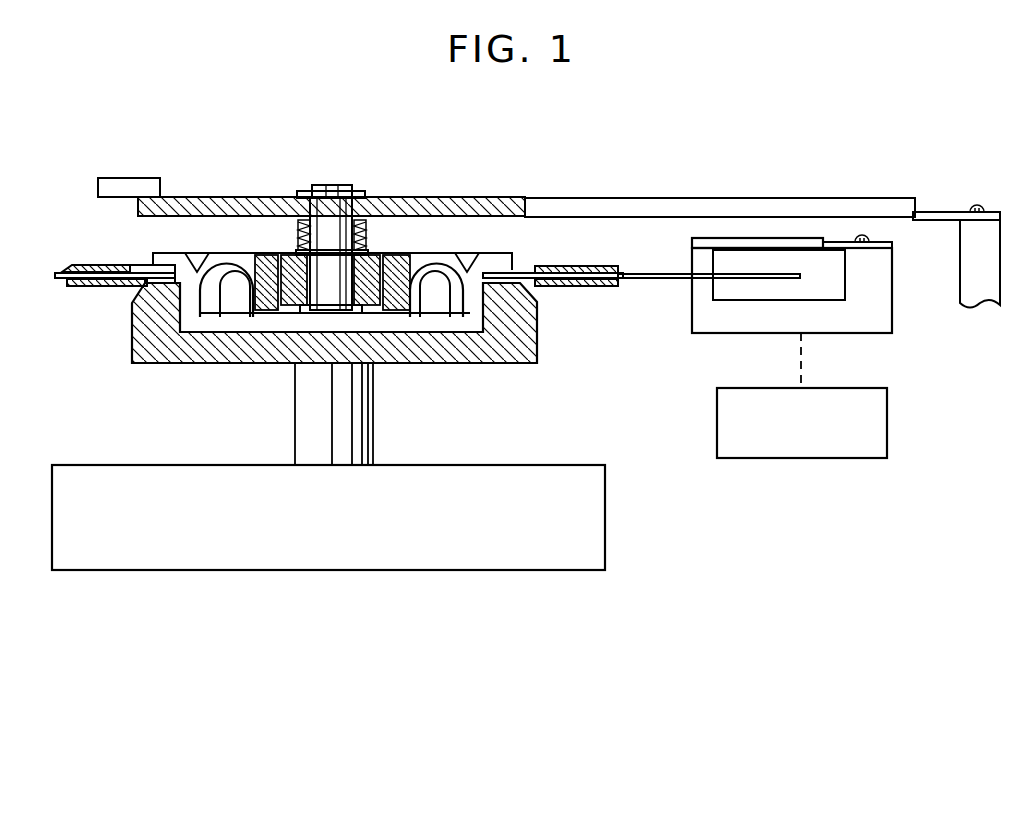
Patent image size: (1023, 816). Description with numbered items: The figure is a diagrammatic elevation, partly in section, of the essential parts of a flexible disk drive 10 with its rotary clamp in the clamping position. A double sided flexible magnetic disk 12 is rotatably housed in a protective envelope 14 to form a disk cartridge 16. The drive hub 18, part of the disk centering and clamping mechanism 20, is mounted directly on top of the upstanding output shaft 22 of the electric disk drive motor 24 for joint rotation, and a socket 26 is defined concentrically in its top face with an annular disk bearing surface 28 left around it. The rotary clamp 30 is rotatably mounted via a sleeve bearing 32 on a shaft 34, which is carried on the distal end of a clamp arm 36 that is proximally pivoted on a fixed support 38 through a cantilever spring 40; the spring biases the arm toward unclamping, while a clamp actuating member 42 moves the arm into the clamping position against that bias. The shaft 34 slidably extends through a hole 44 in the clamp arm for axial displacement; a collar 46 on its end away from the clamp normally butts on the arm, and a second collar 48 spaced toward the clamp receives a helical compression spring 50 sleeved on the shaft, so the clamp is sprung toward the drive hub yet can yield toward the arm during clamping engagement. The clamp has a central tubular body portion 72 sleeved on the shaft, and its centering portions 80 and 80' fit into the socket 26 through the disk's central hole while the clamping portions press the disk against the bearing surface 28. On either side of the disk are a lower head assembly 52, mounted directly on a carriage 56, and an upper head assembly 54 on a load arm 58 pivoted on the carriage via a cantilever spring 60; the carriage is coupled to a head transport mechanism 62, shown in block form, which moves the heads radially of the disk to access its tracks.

The disk drive 10 is at (770, 135).
The magnetic disk 12 is at (55, 280).
The protective envelope 14 is at (80, 287).
The disk cartridge 16 is at (72, 265).
The drive hub 18 is at (538, 348).
The disk centering and clamping mechanism 20 is at (530, 253).
The output shaft 22 is at (374, 410).
The disk drive motor 24 is at (606, 532).
The socket 26 is at (230, 312).
The disk bearing surface 28 is at (140, 286).
The rotary clamp 30 is at (160, 256).
The sleeve bearing 32 is at (294, 308).
The shaft 34 is at (352, 184).
The clamp arm 36 is at (474, 197).
The fixed support 38 is at (960, 262).
The cantilever spring 40 is at (934, 212).
The clamp actuating member 42 is at (134, 178).
The hole 44 is at (383, 196).
The collar 46 is at (298, 190).
The collar 48 is at (369, 251).
The helical compression spring 50 is at (297, 236).
The lower head assembly 52 is at (692, 290).
The upper head assembly 54 is at (692, 258).
The carriage 56 is at (850, 334).
The load arm 58 is at (727, 274).
The cantilever spring 60 is at (895, 245).
The head transport mechanism 62 is at (766, 388).
The tubular body portion 72 is at (270, 310).
The centering portion 80 is at (194, 333).
The centering portion 80' is at (454, 333).